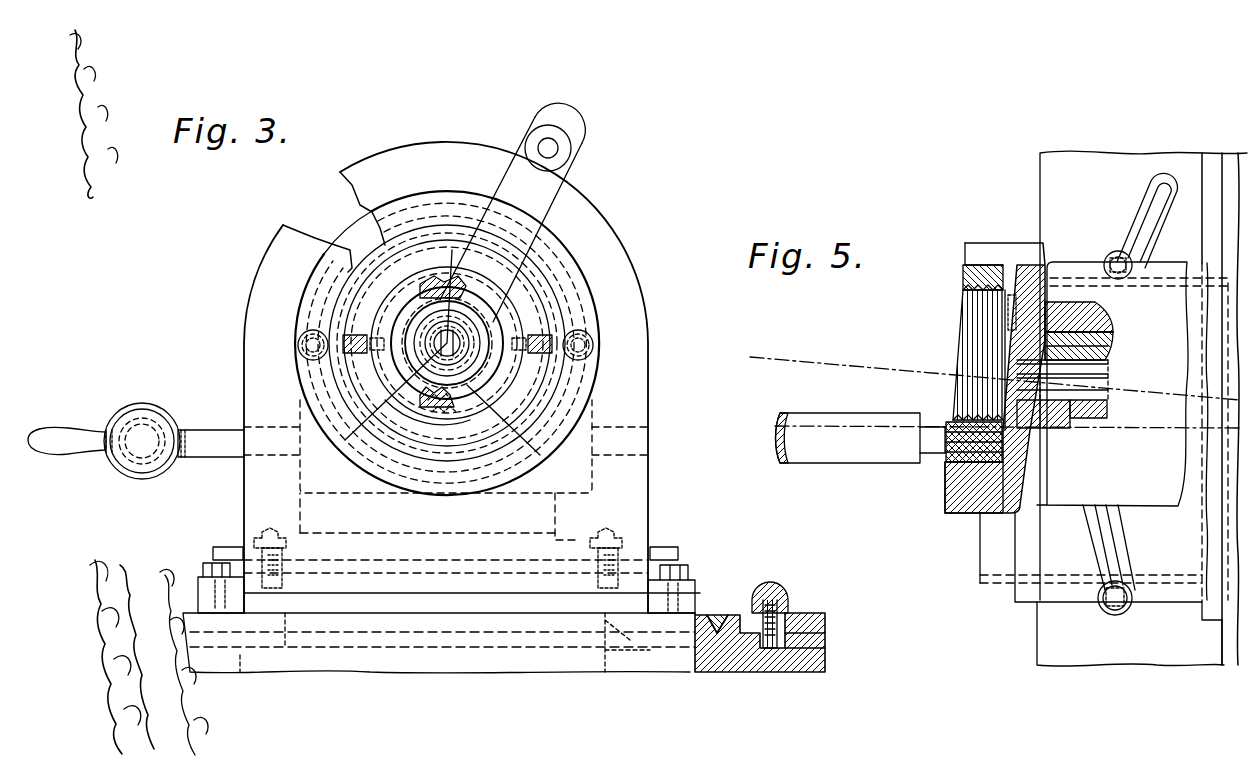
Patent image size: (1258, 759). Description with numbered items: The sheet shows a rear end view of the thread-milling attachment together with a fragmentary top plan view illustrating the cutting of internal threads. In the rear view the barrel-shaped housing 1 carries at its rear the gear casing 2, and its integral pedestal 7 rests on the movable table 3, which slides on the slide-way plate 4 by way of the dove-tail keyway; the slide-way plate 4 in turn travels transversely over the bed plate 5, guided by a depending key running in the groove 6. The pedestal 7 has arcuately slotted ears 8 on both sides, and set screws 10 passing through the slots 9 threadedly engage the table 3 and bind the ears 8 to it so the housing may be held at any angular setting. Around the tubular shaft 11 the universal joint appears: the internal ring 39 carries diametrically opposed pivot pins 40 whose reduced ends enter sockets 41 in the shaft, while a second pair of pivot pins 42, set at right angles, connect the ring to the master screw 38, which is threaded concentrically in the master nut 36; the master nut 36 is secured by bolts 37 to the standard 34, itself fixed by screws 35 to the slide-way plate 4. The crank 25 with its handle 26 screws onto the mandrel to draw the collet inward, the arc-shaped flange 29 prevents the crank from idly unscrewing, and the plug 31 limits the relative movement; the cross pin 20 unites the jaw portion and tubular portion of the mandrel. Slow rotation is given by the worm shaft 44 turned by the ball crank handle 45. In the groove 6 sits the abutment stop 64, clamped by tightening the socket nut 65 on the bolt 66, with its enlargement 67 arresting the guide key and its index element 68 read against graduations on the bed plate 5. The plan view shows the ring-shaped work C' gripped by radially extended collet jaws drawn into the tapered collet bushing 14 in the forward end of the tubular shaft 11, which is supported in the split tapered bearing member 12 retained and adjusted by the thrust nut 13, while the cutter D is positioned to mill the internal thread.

In FIG. 5, the housing 1 is at (1112, 384).
In FIG. 3, the gear casing 2 is at (352, 250).
In FIG. 3, the movable table 3 is at (436, 566).
In FIG. 5, the movable table 3 is at (1113, 408).
In FIG. 3, the slide-way plate 4 is at (318, 578).
In FIG. 3, the bed plate 5 is at (548, 660).
In FIG. 5, the bed plate 5 is at (1130, 634).
In FIG. 3, the groove 6 is at (236, 660).
In FIG. 5, the groove 6 is at (1210, 633).
In FIG. 3, the pedestal 7 is at (558, 524).
In FIG. 3, the ears 8 is at (213, 553).
In FIG. 5, the ears 8 is at (1130, 206).
In FIG. 5, the slots 9 is at (1150, 198).
In FIG. 3, the bolt 10 is at (270, 532).
In FIG. 5, the bolt 10 is at (1108, 256).
In FIG. 3, the tubular shaft 11 is at (495, 460).
In FIG. 5, the tubular shaft 11 is at (1102, 440).
In FIG. 5, the split tapered bearing member 12 is at (1086, 318).
In FIG. 5, the annular spanner thrust nut 13 is at (1060, 306).
In FIG. 5, the collet bushing 14 is at (1110, 335).
In FIG. 3, the cross pin 20 is at (362, 410).
In FIG. 3, the crank 25 is at (512, 212).
In FIG. 3, the handle 26 is at (560, 138).
In FIG. 3, the arc-shaped flange 29 is at (410, 305).
In FIG. 3, the plug 31 is at (500, 415).
In FIG. 3, the standard 34 is at (612, 250).
In FIG. 3, the screws 35 is at (203, 571).
In FIG. 3, the master nut 36 is at (577, 303).
In FIG. 3, the bolts 37 is at (300, 354).
In FIG. 3, the master screw 38 is at (537, 393).
In FIG. 3, the internal ring 39 is at (380, 366).
In FIG. 3, the pivot pins 40 is at (420, 276).
In FIG. 3, the sockets 41 is at (580, 282).
In FIG. 3, the pivot pins 42 is at (355, 336).
In FIG. 3, the worm shaft 44 is at (219, 450).
In FIG. 3, the ball crank handle 45 is at (128, 460).
In FIG. 3, the abutment stop 64 is at (710, 645).
In FIG. 3, the socket nut 65 is at (789, 604).
In FIG. 3, the bolt 66 is at (770, 650).
In FIG. 3, the enlargement 67 is at (612, 660).
In FIG. 3, the index element 68 is at (717, 628).
In FIG. 5, the work C' is at (979, 378).
In FIG. 5, the cutter D is at (945, 423).